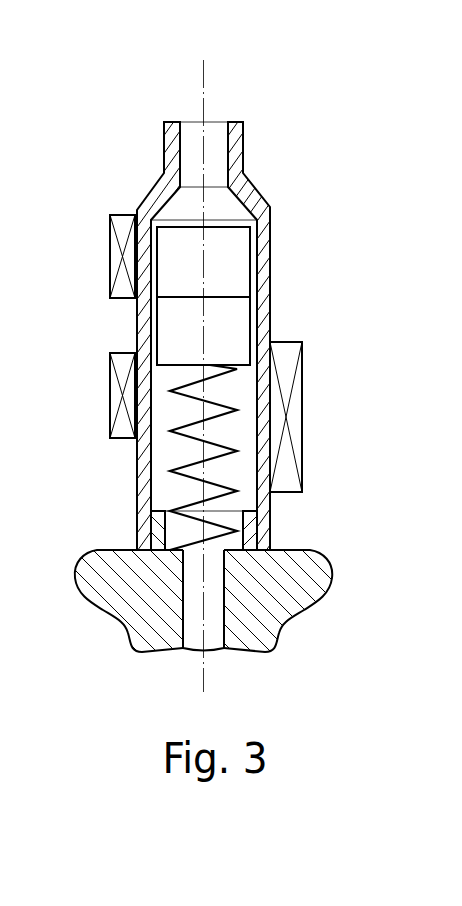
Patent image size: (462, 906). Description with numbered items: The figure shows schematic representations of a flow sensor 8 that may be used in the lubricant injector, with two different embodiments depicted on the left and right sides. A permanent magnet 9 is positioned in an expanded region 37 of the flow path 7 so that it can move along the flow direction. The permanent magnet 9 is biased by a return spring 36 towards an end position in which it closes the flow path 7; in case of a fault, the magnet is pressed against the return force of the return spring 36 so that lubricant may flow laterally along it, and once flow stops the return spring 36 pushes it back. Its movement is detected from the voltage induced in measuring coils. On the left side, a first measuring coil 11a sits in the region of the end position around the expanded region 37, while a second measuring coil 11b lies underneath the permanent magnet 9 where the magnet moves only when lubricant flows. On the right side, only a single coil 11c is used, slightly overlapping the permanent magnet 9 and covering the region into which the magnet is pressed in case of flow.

The flow path 7 is at (203, 98).
The flow sensor 8 is at (295, 108).
The permanent magnet 9 is at (232, 250).
The first measuring coil 11a is at (115, 253).
The second measuring coil 11b is at (123, 420).
The single measuring coil 11c is at (293, 407).
The return spring 36 is at (212, 504).
The expanded region 37 is at (167, 490).